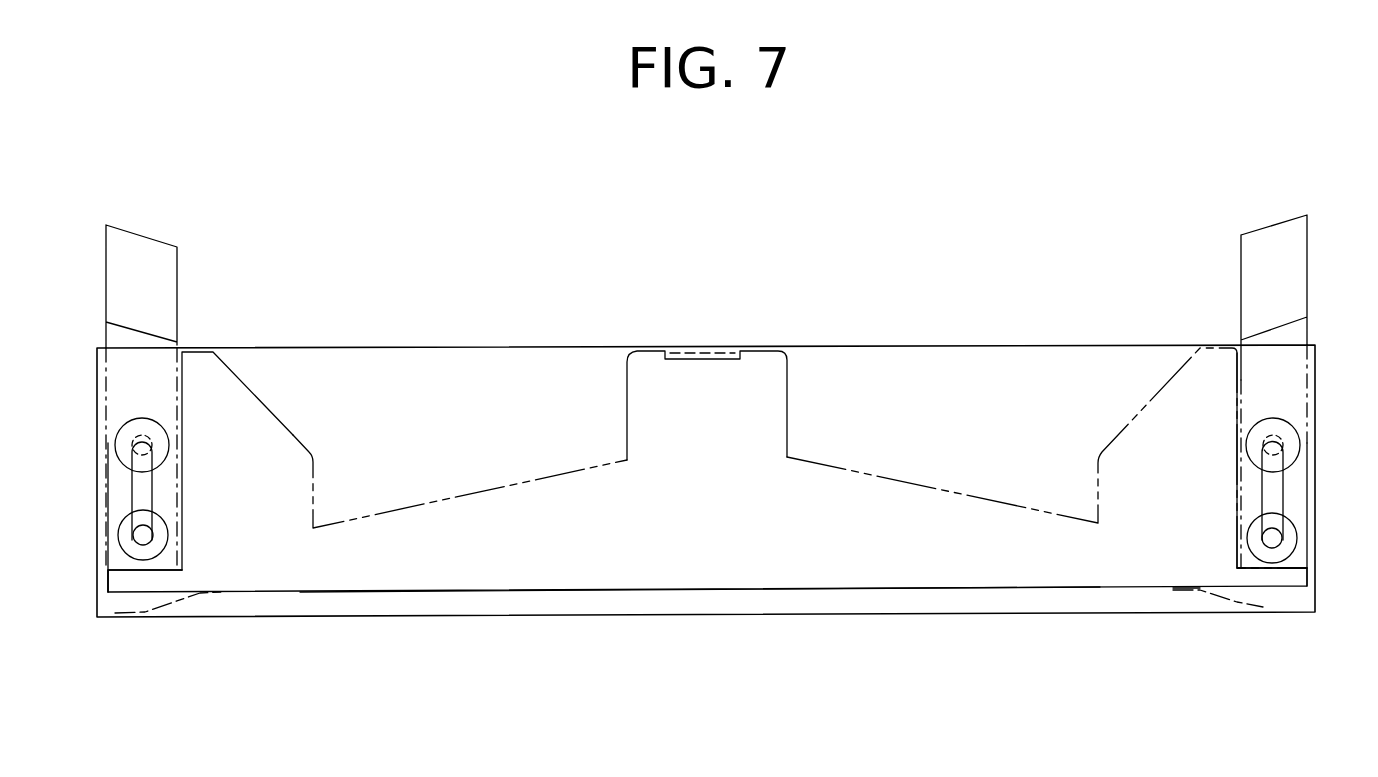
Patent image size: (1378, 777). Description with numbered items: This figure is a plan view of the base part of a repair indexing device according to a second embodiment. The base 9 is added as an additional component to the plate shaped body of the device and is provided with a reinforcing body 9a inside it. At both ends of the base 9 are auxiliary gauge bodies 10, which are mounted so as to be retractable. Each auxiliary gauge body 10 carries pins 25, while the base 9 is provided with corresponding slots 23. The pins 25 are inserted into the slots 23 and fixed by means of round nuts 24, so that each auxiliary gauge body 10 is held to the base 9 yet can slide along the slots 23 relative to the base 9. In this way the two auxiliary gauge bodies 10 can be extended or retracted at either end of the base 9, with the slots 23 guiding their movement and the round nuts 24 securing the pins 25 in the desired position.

The base 9 is at (853, 258).
The reinforcing body 9a is at (706, 537).
The auxiliary gauge body 10 is at (116, 340).
The slot 23 is at (153, 480).
The round nut 24 is at (162, 563).
The pin 25 is at (143, 535).